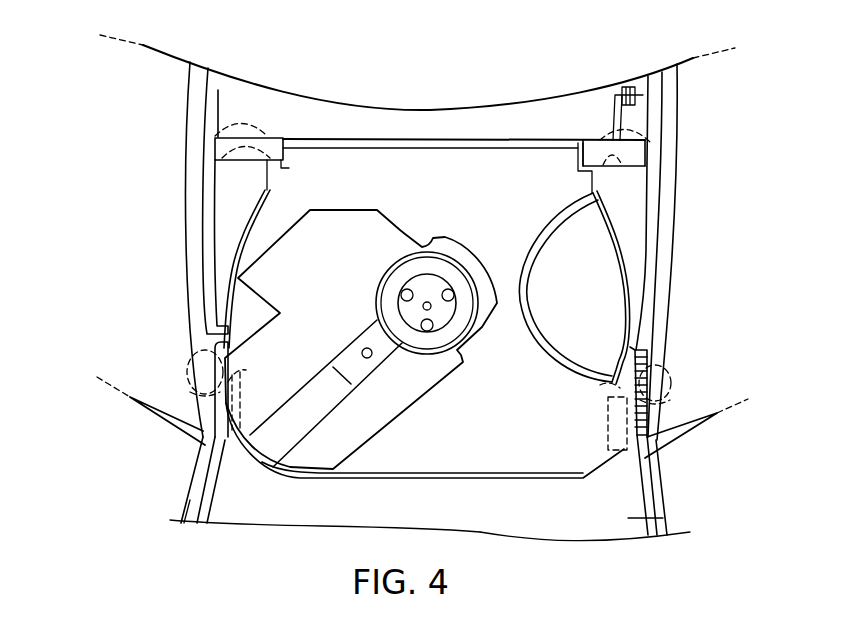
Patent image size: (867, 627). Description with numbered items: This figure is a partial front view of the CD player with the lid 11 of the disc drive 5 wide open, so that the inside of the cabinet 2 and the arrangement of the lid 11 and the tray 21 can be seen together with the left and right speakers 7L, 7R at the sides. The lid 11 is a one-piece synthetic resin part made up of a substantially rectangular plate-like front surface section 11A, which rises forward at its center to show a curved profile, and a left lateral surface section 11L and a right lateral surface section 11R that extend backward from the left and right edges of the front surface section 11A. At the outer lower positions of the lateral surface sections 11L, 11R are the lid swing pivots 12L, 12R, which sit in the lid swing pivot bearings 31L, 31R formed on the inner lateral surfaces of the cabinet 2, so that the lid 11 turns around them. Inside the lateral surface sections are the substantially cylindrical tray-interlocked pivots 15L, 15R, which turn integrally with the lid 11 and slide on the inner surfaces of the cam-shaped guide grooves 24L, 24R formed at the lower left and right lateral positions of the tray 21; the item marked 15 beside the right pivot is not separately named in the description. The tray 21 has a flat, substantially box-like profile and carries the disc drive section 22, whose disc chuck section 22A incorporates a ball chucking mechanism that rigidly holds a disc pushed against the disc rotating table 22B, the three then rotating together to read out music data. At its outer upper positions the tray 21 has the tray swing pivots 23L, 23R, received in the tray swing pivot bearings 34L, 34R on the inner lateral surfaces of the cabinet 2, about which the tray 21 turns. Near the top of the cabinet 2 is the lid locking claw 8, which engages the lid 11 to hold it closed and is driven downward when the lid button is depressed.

The cabinet 2 is at (583, 84).
The lid locking claw 8 is at (640, 88).
The left tray swing pivot 23L is at (262, 133).
The left tray swing pivot bearing 34L is at (262, 152).
The right tray swing pivot 23R is at (597, 135).
The right tray swing pivot bearing 34R is at (605, 152).
The disc drive section 22 is at (348, 214).
The disc rotating table 22B is at (428, 268).
The disc chuck section 22A is at (440, 287).
The left cam-shaped guide groove 24L is at (326, 393).
The right cam-shaped guide groove 24R is at (607, 390).
The rack 15 is at (648, 354).
The left tray-interlocked pivot 15L is at (251, 389).
The right tray-interlocked pivot 15R is at (608, 425).
The left lid swing pivot 12L is at (207, 382).
The right lid swing pivot 12R is at (660, 378).
The left lid swing pivot bearing 31L is at (205, 390).
The right lid swing pivot bearing 31R is at (655, 398).
The left speaker 7L is at (130, 398).
The right speaker 7R is at (722, 414).
The disc drive 5 is at (138, 462).
The lid 11 is at (670, 530).
The front surface section 11A is at (235, 511).
The left lateral surface section 11L is at (178, 487).
The right lateral surface section 11R is at (666, 502).
The tray 21 is at (610, 467).